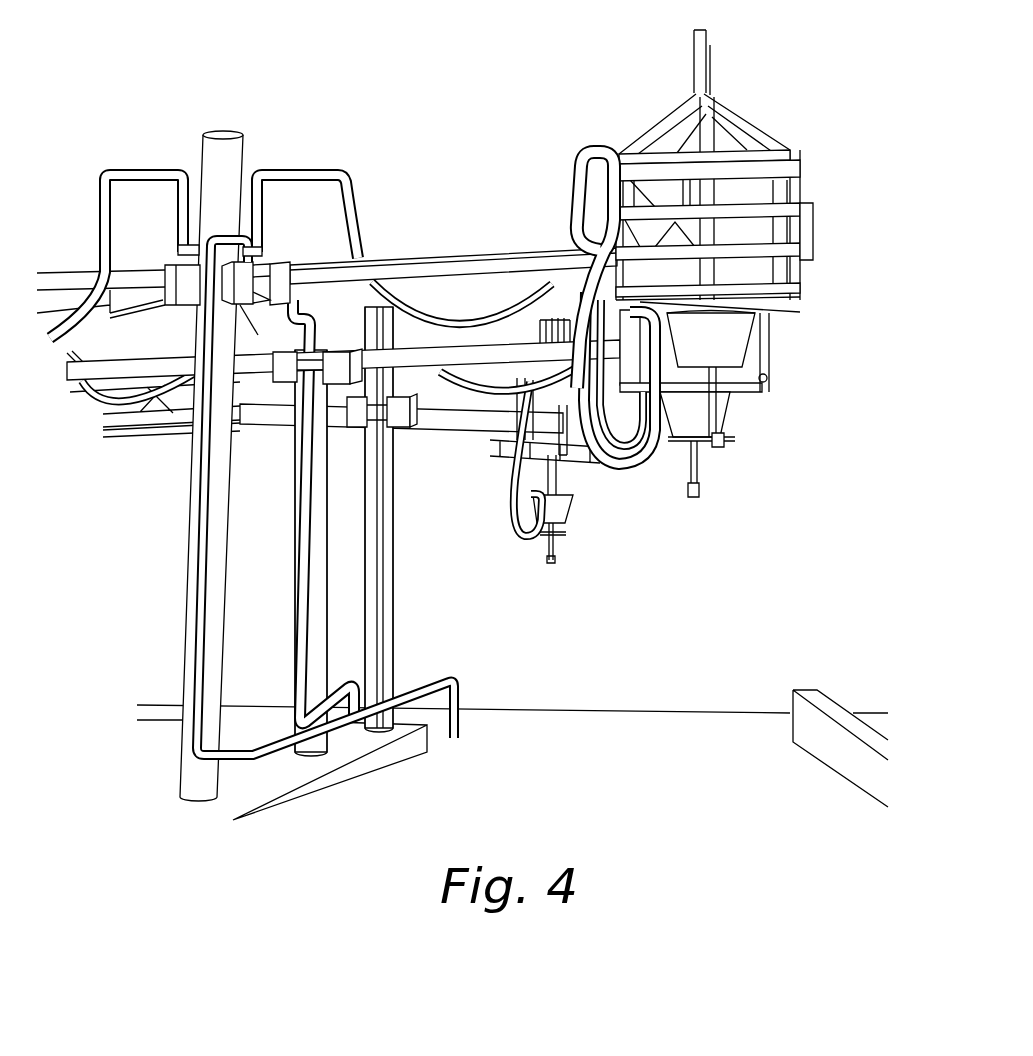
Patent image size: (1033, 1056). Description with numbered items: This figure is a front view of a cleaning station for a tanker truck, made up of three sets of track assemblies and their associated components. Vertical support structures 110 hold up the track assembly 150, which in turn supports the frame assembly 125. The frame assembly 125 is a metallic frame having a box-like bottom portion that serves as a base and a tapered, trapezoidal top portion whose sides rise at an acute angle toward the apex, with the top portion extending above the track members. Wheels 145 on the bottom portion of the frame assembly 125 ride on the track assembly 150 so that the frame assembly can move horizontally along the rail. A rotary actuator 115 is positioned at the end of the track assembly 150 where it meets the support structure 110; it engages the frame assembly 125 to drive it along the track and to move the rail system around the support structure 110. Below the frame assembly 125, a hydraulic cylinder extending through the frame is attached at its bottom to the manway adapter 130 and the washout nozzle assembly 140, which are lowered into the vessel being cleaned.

The support structure 110 is at (217, 167).
The rotary actuator 115 is at (337, 357).
The frame assembly 125 is at (665, 217).
The manway adapter 130 is at (693, 410).
The washout nozzle assembly 140 is at (724, 438).
The wheels 145 is at (600, 283).
The track assembly 150 is at (487, 357).